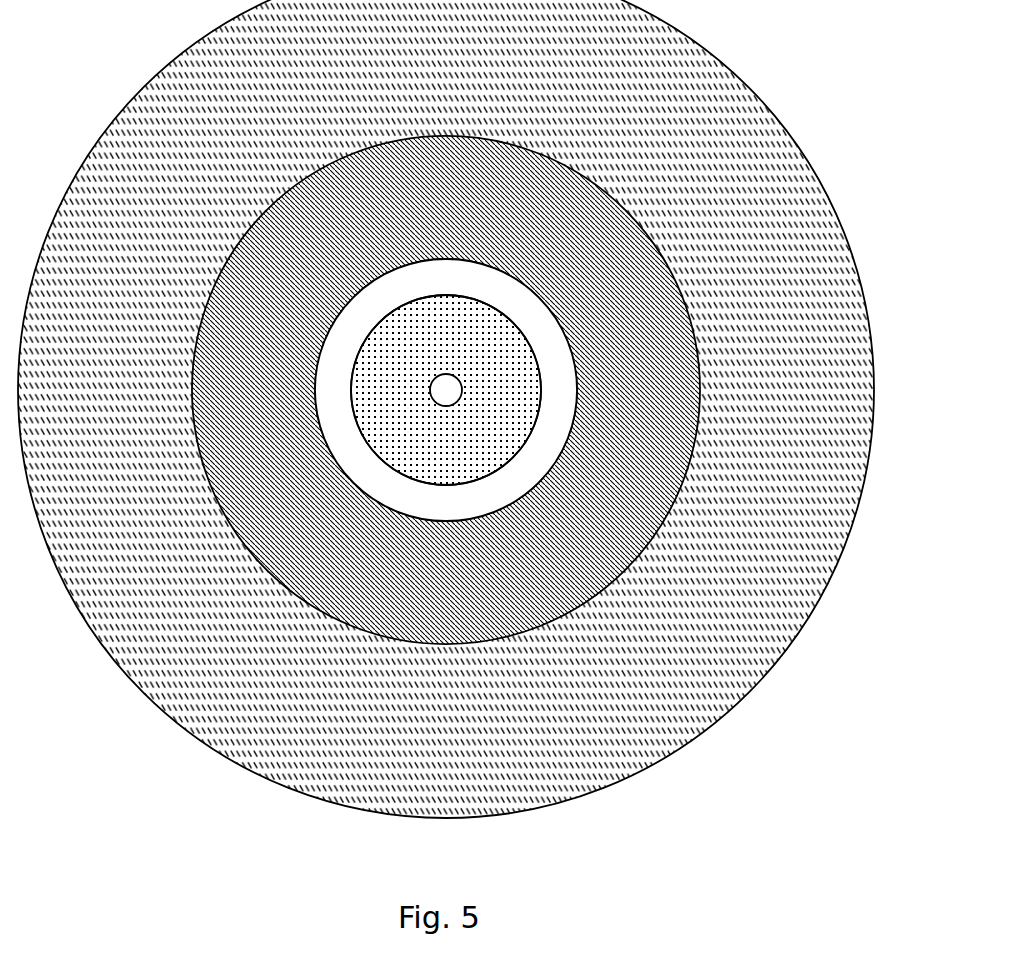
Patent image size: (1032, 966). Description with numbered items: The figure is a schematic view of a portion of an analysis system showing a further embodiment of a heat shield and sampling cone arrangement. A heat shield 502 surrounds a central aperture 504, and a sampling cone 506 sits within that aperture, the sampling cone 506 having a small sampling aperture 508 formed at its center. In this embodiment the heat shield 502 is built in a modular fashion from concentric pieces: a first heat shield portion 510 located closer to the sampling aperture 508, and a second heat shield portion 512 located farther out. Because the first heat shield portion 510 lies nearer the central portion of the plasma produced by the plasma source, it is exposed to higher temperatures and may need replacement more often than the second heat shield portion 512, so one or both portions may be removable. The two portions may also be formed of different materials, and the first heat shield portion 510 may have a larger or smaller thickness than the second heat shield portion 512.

The heat shield 502 is at (753, 90).
The aperture 504 is at (553, 332).
The sampling cone 506 is at (522, 423).
The sampling aperture 508 is at (466, 410).
The first heat shield portion 510 is at (610, 333).
The second heat shield portion 512 is at (753, 247).